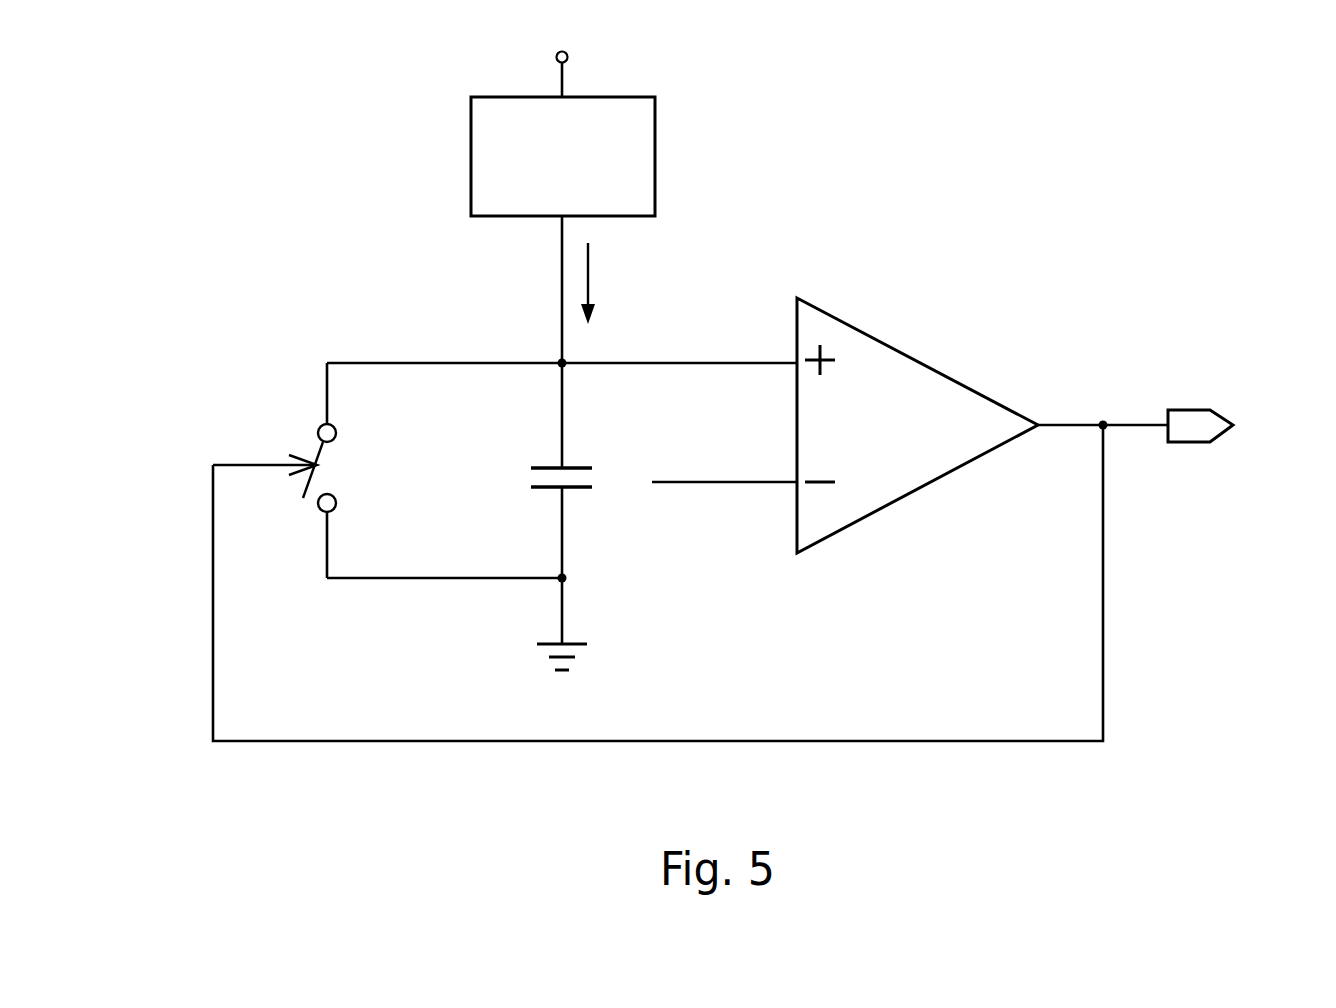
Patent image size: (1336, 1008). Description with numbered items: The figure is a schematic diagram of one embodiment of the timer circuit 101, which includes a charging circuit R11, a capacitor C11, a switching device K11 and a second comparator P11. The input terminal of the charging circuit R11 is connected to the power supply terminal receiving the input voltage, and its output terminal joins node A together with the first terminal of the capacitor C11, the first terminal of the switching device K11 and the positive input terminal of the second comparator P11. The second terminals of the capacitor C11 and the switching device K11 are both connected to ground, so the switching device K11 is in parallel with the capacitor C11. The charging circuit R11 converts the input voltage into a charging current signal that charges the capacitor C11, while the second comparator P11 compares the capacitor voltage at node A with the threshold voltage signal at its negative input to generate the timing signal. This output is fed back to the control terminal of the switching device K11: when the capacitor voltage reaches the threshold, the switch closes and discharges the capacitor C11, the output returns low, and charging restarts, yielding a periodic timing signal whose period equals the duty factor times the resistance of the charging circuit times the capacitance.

The timer circuit 101 is at (228, 156).
The charging circuit R11 is at (587, 204).
The capacitor C11 is at (531, 478).
The switching device K11 is at (303, 470).
The second comparator P11 is at (918, 365).